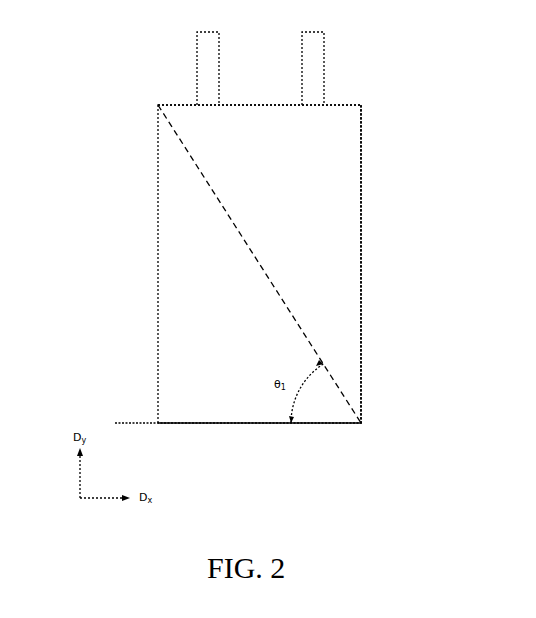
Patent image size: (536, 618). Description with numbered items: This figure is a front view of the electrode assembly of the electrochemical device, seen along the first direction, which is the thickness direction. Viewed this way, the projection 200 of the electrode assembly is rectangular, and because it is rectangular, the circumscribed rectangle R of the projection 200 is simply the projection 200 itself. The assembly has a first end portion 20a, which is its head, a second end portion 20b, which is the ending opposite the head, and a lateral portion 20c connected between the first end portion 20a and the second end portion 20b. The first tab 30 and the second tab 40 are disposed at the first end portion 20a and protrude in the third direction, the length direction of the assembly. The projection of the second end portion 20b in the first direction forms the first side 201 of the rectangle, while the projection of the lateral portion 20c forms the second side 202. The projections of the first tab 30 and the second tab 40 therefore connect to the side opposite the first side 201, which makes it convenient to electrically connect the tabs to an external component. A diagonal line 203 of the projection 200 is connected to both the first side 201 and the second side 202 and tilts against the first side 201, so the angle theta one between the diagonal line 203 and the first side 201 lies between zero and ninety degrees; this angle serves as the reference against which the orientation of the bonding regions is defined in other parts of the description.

The projection of the electrode assembly 200 is at (158, 240).
The first tab 30 is at (203, 54).
The second tab 40 is at (317, 55).
The first end portion 20a is at (235, 103).
The second end portion 20b is at (319, 425).
The lateral portion 20c is at (361, 303).
The first side 201 is at (227, 424).
The second side 202 is at (362, 250).
The diagonal line 203 is at (243, 238).